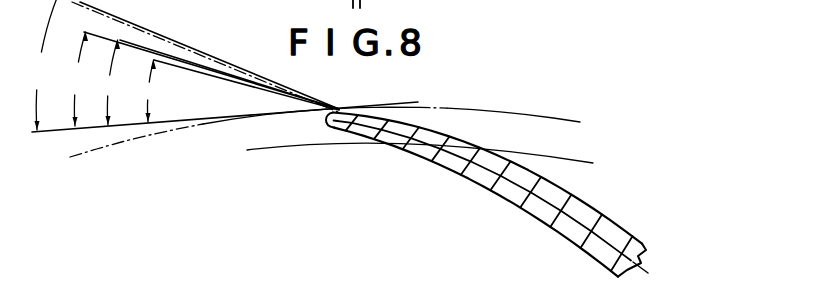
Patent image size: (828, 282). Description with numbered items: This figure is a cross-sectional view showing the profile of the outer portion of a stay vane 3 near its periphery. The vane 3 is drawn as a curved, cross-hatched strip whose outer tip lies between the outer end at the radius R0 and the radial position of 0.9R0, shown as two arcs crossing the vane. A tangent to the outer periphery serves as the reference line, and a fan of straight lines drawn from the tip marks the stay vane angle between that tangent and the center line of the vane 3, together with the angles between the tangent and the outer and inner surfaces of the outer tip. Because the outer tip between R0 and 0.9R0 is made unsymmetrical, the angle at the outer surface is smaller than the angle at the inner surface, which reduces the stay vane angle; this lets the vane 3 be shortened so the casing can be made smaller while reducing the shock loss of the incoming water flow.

The stay vane 3 is at (590, 212).
The outer radius of the stay vane R0 is at (208, 129).
The radial position of 0.9 R0 0.9R0 is at (303, 149).